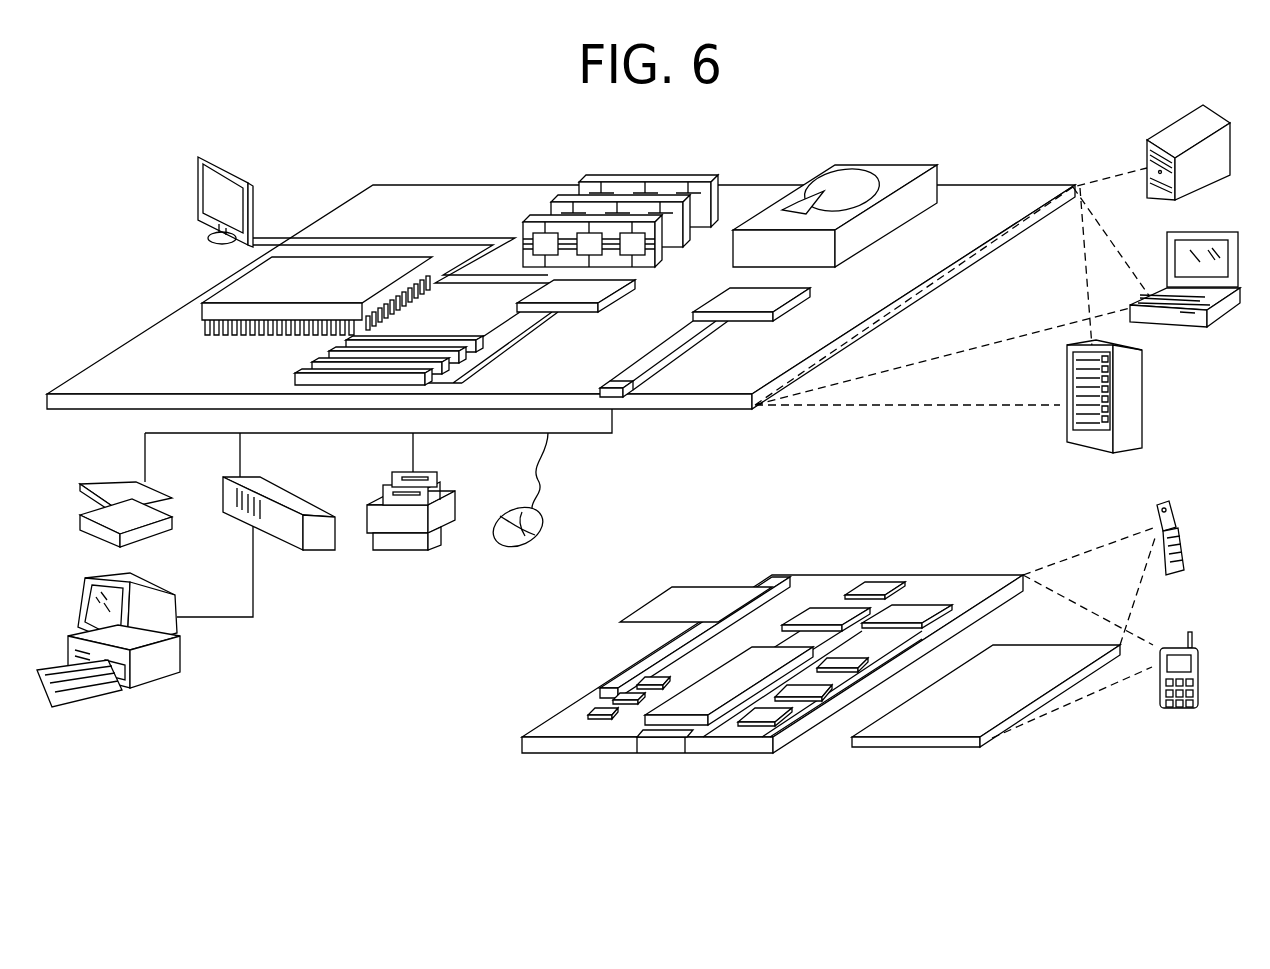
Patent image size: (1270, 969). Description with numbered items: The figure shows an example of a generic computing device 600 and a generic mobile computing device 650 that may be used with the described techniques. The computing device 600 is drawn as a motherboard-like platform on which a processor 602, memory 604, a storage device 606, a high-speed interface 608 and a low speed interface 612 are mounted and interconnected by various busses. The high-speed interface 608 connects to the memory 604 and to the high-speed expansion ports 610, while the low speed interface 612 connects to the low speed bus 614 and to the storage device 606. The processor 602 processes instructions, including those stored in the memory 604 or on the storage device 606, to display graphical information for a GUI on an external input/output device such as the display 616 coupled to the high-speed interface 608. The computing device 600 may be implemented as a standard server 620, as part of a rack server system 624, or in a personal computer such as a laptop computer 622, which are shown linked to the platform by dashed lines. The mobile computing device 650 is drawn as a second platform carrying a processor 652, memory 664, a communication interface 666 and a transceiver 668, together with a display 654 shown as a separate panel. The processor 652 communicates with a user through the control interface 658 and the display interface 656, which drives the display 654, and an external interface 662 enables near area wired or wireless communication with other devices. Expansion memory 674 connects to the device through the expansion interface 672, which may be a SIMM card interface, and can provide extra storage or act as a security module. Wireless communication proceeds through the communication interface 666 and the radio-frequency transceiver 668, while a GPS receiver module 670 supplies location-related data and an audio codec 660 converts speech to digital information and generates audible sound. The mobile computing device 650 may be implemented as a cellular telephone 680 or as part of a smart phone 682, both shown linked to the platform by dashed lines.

The computing device 600 is at (322, 136).
The processor 602 is at (224, 288).
The memory 604 is at (653, 180).
The storage device 606 is at (873, 165).
The high-speed interface 608 is at (588, 290).
The high-speed expansion ports 610 is at (320, 360).
The low speed interface 612 is at (725, 295).
The low speed bus 614 is at (618, 381).
The display 616 is at (202, 158).
The standard server 620 is at (1167, 135).
The laptop computer 622 is at (1218, 233).
The rack server system 624 is at (1143, 390).
The mobile computing device 650 is at (476, 766).
The processor 652 is at (700, 690).
The display 654 is at (1024, 660).
The display interface 656 is at (776, 712).
The control interface 658 is at (810, 688).
The audio codec 660 is at (847, 663).
The external interface 662 is at (663, 738).
The memory 664 is at (617, 695).
The communication interface 666 is at (827, 605).
The transceiver 668 is at (913, 607).
The GPS receiver module 670 is at (875, 585).
The expansion interface 672 is at (752, 584).
The expansion memory 674 is at (673, 587).
The cellular telephone 680 is at (1163, 500).
The smart phone 682 is at (1172, 648).